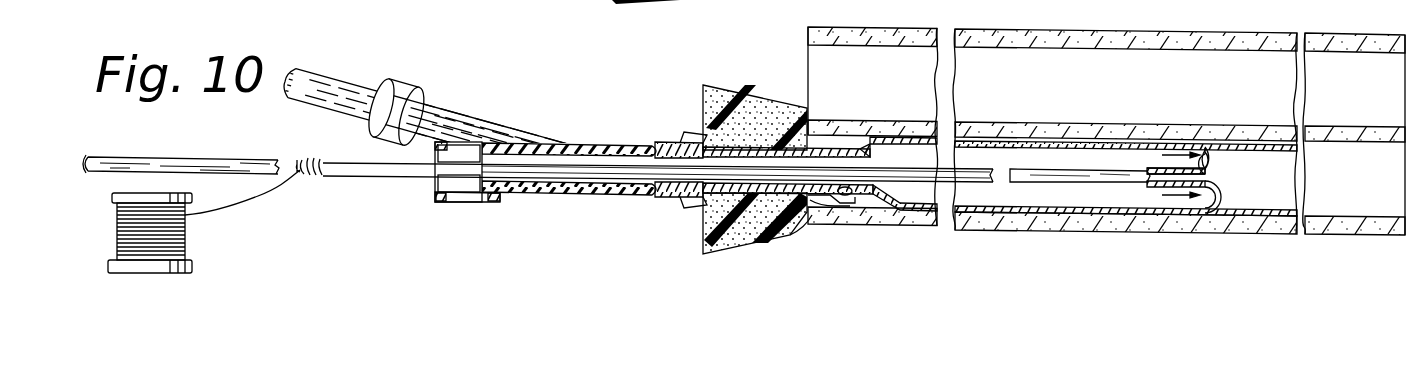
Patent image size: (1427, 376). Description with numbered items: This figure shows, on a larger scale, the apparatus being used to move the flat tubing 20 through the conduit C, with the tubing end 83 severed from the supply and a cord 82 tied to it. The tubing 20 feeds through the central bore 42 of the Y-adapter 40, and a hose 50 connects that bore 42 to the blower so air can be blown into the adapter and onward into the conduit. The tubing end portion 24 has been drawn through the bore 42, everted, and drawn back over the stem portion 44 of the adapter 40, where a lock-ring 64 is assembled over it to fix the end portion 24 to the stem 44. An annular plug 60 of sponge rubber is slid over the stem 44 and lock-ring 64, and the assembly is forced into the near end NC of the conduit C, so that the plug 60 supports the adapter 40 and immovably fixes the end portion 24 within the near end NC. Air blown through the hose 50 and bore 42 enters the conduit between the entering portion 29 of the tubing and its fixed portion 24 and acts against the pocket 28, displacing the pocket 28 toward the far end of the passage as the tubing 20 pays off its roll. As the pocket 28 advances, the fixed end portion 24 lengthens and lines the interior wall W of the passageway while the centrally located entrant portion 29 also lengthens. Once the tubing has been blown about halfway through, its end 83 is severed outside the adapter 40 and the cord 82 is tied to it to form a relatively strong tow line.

The flat tubing 20 is at (164, 157).
The tubing end portion 24 is at (810, 120).
The pocket 28 is at (1204, 145).
The entering portion of the tubing 29 is at (1096, 170).
The Y-adapter 40 is at (611, 205).
The central bore 42 is at (543, 181).
The stem portion 44 is at (703, 97).
The hose 50 is at (381, 52).
The annular plug 60 is at (773, 62).
The lock-ring 64 is at (826, 207).
The cord 82 is at (222, 207).
The tubing end 83 is at (349, 176).
The near end of the conduit NC is at (815, 222).
The conduit C is at (1286, 22).
The interior wall W is at (1395, 152).